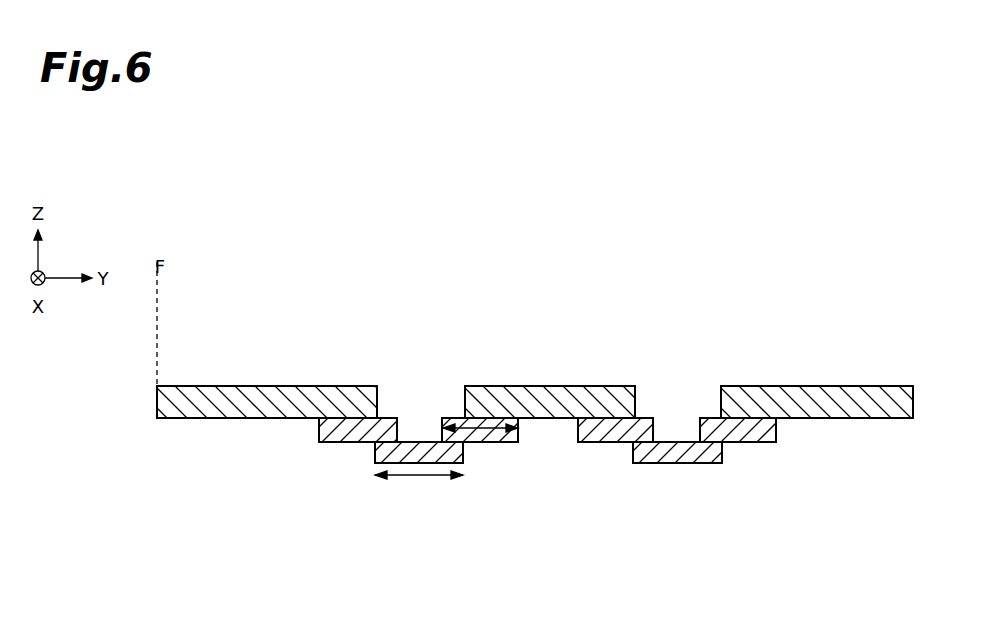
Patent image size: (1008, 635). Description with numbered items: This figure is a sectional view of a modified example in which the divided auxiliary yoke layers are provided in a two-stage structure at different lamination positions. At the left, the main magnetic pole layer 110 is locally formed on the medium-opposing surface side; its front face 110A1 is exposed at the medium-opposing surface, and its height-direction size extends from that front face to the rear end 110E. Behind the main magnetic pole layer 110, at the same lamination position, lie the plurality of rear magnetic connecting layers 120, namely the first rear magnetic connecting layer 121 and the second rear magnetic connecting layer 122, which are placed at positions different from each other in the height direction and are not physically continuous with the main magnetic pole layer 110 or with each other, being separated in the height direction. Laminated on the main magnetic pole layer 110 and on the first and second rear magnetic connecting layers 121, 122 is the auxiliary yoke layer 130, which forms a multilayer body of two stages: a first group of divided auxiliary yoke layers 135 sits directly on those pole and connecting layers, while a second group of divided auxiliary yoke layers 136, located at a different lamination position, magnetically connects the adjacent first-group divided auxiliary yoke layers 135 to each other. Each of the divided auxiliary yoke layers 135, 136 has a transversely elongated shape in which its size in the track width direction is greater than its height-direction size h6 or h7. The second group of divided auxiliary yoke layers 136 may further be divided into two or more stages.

The main magnetic pole layer 110 is at (223, 402).
The front face 110A1 is at (157, 408).
The rear end 110E is at (377, 392).
The rear magnetic connecting layers 120 is at (687, 332).
The first rear magnetic connecting layer 121 is at (588, 397).
The second rear magnetic connecting layer 122 is at (815, 358).
The auxiliary yoke layer 130 is at (551, 517).
The first group of divided auxiliary yoke layers 135 is at (395, 450).
The second group of divided auxiliary yoke layers 136 is at (446, 447).
The size in the height direction h7 is at (419, 488).
The size in the height direction h6 is at (484, 443).